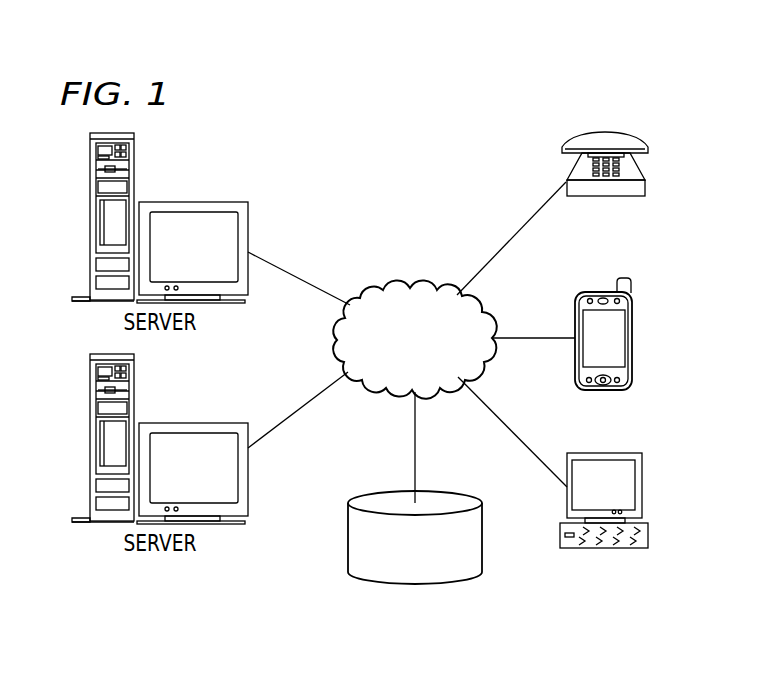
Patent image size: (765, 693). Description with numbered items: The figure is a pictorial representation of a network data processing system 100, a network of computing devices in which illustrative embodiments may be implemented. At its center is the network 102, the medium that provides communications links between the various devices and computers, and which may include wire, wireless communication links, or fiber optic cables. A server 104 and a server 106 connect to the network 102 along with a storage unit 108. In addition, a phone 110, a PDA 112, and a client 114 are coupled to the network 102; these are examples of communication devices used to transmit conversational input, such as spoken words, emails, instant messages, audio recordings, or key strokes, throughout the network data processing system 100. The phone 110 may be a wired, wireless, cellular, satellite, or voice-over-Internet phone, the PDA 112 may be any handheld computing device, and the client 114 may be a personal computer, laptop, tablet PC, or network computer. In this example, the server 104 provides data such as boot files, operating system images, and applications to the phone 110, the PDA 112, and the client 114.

The network data processing system 100 is at (455, 130).
The network 102 is at (385, 290).
The server 104 is at (91, 218).
The server 106 is at (90, 440).
The storage unit 108 is at (397, 581).
The phone 110 is at (618, 133).
The PDA 112 is at (632, 352).
The client 114 is at (642, 487).